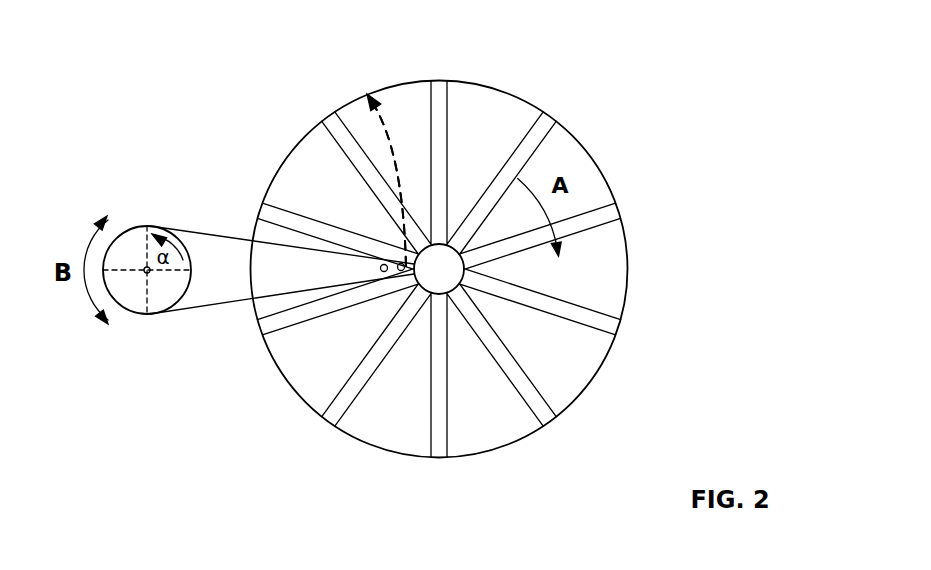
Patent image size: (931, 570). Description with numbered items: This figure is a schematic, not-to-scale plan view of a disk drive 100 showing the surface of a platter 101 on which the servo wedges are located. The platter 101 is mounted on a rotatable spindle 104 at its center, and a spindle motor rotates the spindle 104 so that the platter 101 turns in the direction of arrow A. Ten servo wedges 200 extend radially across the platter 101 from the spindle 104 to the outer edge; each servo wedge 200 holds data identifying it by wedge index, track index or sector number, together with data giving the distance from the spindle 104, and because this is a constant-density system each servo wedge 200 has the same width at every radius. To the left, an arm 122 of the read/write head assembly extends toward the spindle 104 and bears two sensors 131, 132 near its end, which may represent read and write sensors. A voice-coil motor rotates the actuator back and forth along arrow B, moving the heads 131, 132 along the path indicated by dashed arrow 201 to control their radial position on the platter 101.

The disk drive 100 is at (178, 46).
The platter 101 is at (372, 94).
The spindle 104 is at (440, 268).
The arm 122 is at (176, 226).
The sensor 131 is at (401, 273).
The sensor 132 is at (385, 274).
The servo wedge 200 is at (440, 90).
The dashed arrow 201 is at (387, 133).